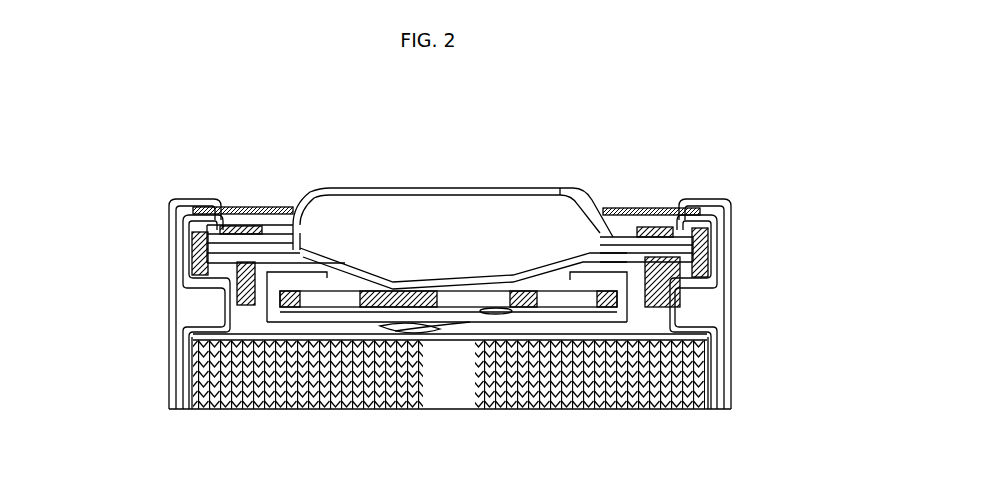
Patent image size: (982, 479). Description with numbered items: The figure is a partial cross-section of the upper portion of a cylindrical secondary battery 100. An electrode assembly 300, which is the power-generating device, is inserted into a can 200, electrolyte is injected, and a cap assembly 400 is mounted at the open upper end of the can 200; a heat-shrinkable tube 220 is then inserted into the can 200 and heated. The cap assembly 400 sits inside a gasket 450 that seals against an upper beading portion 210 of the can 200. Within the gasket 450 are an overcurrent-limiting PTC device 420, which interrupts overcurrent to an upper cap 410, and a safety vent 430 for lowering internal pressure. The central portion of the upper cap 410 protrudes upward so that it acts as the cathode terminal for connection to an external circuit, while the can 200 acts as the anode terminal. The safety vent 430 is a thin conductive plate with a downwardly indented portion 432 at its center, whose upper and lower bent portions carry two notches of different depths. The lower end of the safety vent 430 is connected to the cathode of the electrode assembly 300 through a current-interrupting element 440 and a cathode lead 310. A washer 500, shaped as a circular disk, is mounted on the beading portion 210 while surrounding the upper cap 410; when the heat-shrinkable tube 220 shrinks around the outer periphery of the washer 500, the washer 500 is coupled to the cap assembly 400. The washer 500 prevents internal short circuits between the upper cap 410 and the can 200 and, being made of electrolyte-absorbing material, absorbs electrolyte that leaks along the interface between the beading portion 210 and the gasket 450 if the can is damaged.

The battery 100 is at (117, 127).
The can 200 is at (727, 406).
The beading portion 210 is at (183, 366).
The heat-shrinkable tube 220 is at (177, 298).
The electrode assembly 300 is at (475, 431).
The cathode lead 310 is at (447, 338).
The cap assembly 400 is at (752, 184).
The upper cap 410 is at (415, 188).
The PTC device 420 is at (622, 246).
The safety vent 430 is at (372, 216).
The indented portion 432 is at (490, 272).
The current-interrupting element 440 is at (203, 370).
The gasket 450 is at (197, 248).
The washer 500 is at (248, 208).